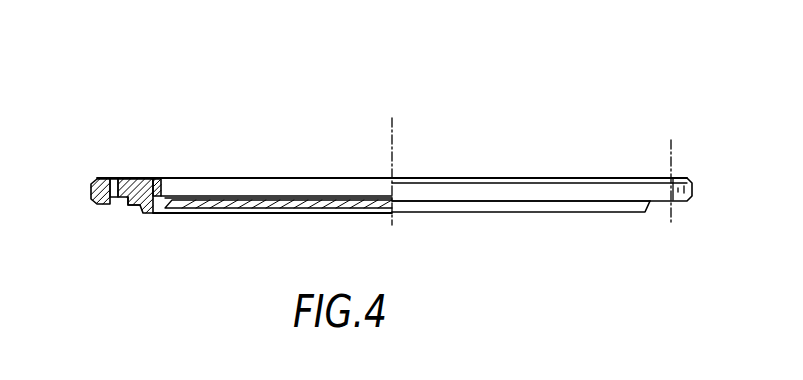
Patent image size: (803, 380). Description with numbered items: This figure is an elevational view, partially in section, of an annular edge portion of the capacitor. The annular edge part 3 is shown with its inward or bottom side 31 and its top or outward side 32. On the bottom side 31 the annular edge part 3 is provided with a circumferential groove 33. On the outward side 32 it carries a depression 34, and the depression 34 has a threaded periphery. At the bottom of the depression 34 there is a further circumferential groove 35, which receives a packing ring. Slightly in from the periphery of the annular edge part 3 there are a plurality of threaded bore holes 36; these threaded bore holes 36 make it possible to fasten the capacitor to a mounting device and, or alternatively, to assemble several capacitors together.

The annular edge part 3 is at (553, 192).
The inward or bottom side 31 is at (575, 212).
The top or outward side 32 is at (531, 176).
The circumferential groove 33 is at (133, 206).
The depression 34 is at (272, 188).
The circumferential groove 35 is at (160, 180).
The threaded bore holes 36 is at (110, 180).